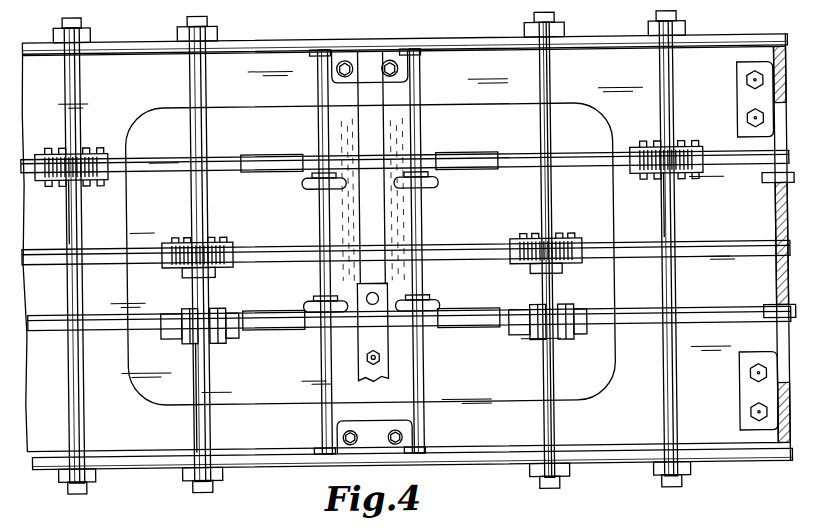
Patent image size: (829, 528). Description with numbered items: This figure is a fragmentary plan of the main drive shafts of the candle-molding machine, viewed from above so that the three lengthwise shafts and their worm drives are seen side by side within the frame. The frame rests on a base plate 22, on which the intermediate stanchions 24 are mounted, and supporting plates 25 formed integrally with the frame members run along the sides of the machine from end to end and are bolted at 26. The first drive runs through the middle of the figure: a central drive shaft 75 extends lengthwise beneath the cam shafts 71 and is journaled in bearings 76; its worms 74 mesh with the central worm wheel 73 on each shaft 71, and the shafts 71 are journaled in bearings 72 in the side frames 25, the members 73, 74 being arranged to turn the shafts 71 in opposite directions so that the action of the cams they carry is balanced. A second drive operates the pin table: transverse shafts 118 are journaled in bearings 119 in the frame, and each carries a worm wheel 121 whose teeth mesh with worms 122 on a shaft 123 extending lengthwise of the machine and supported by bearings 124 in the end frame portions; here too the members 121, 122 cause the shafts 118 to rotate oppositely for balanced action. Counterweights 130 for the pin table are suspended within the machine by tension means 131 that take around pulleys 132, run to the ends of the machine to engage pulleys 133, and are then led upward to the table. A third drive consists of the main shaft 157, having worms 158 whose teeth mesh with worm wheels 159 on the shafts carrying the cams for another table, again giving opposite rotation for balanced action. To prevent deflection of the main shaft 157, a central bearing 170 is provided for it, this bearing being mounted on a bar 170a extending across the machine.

The base plate 22 is at (296, 400).
The stanchions 24 is at (381, 56).
The supporting plates 25 is at (472, 39).
The bolts 26 is at (778, 40).
The shafts 71 is at (208, 381).
The bearings 72 is at (180, 30).
The worm wheel 73 is at (176, 267).
The worms 74 is at (212, 240).
The central drive shaft 75 is at (476, 246).
The bearings 76 is at (776, 232).
The shafts 118 is at (82, 416).
The bearings 119 is at (92, 30).
The worm wheel 121 is at (82, 200).
The worms 122 is at (92, 147).
The shaft 123 is at (272, 155).
The bearings 124 is at (739, 140).
The counterweights 130 is at (384, 232).
The tension means 131 is at (262, 170).
The pulleys 132 is at (310, 188).
The pulleys 133 is at (766, 187).
The main shaft 157 is at (462, 326).
The worms 158 is at (172, 336).
The worm wheels 159 is at (240, 308).
The central bearing 170 is at (357, 362).
The bar 170a is at (368, 380).